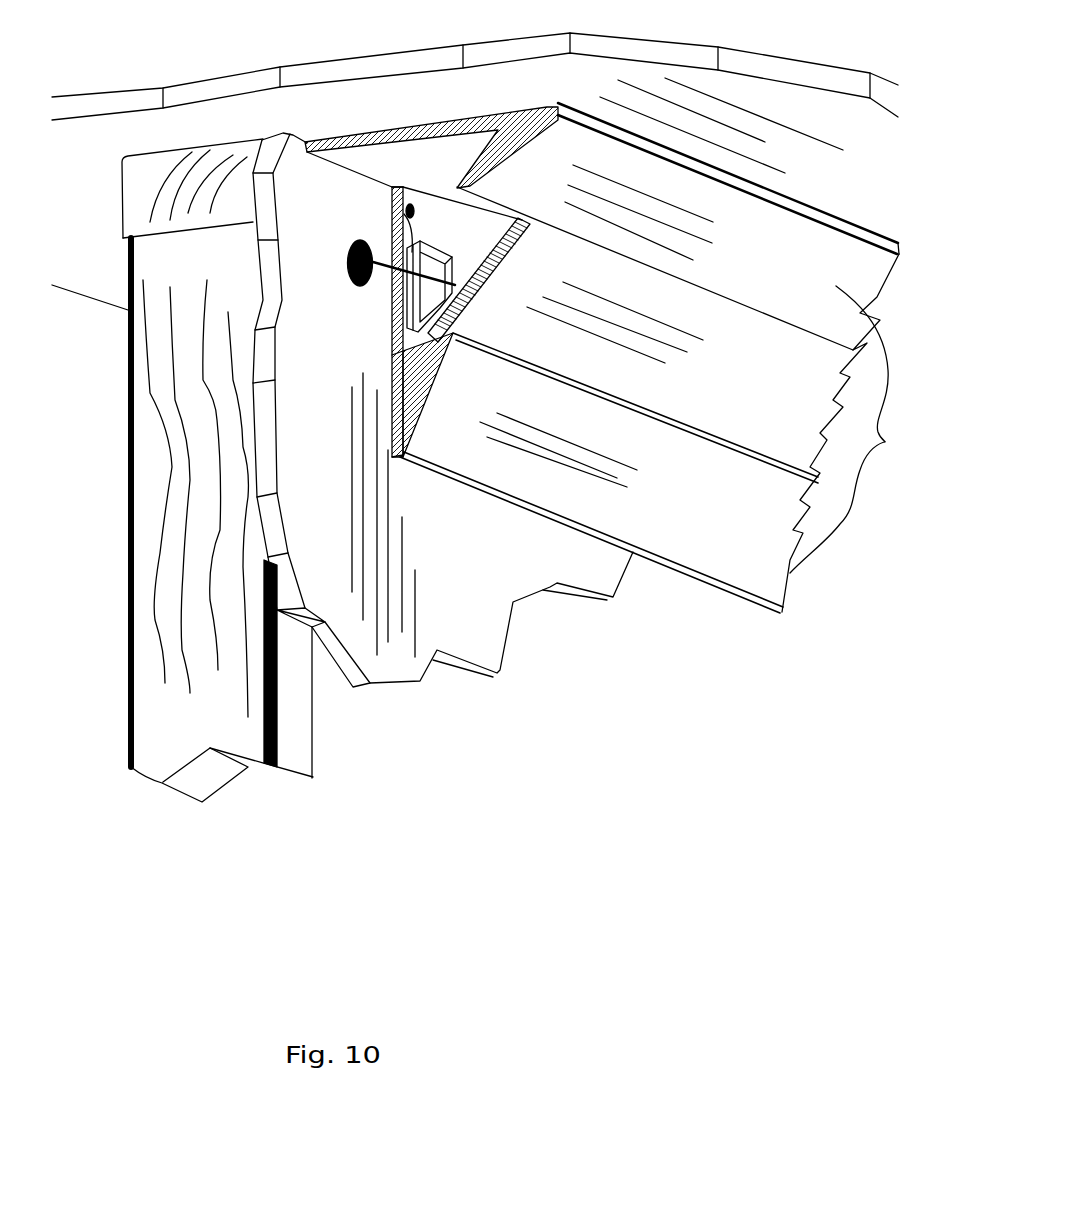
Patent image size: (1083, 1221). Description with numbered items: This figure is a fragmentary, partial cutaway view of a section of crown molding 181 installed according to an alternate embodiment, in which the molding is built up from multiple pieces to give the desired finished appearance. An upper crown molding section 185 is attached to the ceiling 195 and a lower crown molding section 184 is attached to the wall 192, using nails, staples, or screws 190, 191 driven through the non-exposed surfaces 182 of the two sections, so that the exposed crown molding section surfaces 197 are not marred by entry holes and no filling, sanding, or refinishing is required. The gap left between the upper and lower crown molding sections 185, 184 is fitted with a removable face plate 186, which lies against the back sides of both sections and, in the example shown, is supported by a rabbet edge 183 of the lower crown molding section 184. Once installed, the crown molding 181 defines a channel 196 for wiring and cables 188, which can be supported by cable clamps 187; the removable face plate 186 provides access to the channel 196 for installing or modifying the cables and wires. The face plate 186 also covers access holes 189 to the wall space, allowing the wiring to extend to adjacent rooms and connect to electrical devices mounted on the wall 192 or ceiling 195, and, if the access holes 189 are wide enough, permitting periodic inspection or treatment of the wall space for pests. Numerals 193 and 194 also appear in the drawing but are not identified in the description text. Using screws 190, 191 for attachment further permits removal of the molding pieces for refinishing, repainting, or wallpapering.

The crown molding 181 is at (136, 947).
The non-exposed surfaces 182 is at (462, 237).
The rabbet edge 183 is at (395, 350).
The lower crown molding section 184 is at (397, 391).
The upper crown molding section 185 is at (495, 113).
The removable face plate 186 is at (740, 376).
The cable clamps 187 is at (398, 218).
The wiring and cables 188 is at (393, 262).
The access holes 189 is at (362, 286).
The nails, staples, or screws 190 is at (380, 157).
The nails, staples, or screws 191 is at (390, 193).
The wall 192 is at (484, 564).
The side post 193 is at (244, 271).
The top cap 194 is at (159, 194).
The ceiling 195 is at (857, 129).
The channel 196 is at (479, 280).
The exposed crown molding section surfaces 197 is at (884, 442).